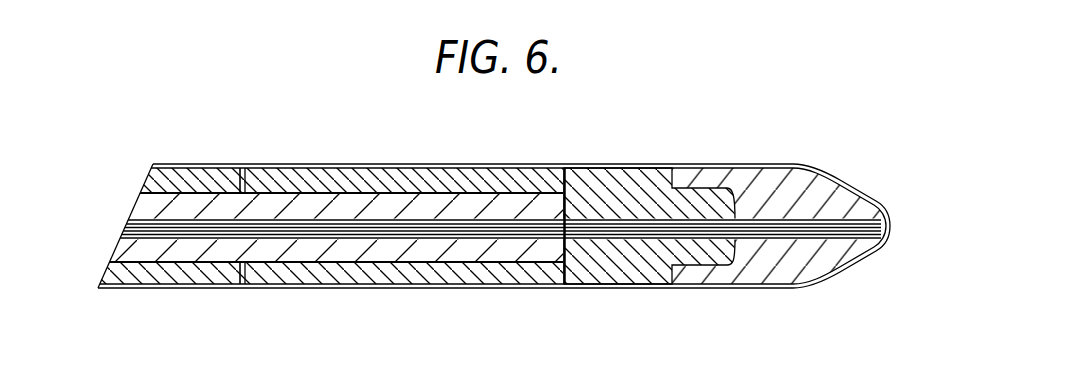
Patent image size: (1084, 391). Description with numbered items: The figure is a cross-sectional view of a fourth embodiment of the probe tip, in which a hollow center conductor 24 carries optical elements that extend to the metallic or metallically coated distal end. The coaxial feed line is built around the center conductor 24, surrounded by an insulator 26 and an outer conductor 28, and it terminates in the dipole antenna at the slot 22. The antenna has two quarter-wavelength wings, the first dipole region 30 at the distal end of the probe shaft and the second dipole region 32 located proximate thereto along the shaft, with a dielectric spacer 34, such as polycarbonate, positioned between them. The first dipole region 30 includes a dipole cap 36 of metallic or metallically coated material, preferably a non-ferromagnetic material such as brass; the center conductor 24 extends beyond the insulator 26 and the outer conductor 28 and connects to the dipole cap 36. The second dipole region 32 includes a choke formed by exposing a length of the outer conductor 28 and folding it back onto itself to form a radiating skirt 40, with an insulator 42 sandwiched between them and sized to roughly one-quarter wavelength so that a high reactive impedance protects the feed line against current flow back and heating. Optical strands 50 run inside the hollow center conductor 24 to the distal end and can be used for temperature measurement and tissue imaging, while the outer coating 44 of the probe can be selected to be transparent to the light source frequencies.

The slot 22 is at (615, 284).
The center conductor 24 is at (139, 222).
The insulator 26 is at (512, 205).
The outer conductor 28 is at (519, 287).
The first dipole region 30 is at (739, 308).
The second dipole region 32 is at (485, 304).
The spacer 34 is at (621, 177).
The dipole cap 36 is at (796, 170).
The radiating skirt 40 is at (448, 286).
The insulator 42 is at (366, 274).
The outer coating 44 is at (846, 266).
The optical strands 50 is at (823, 221).